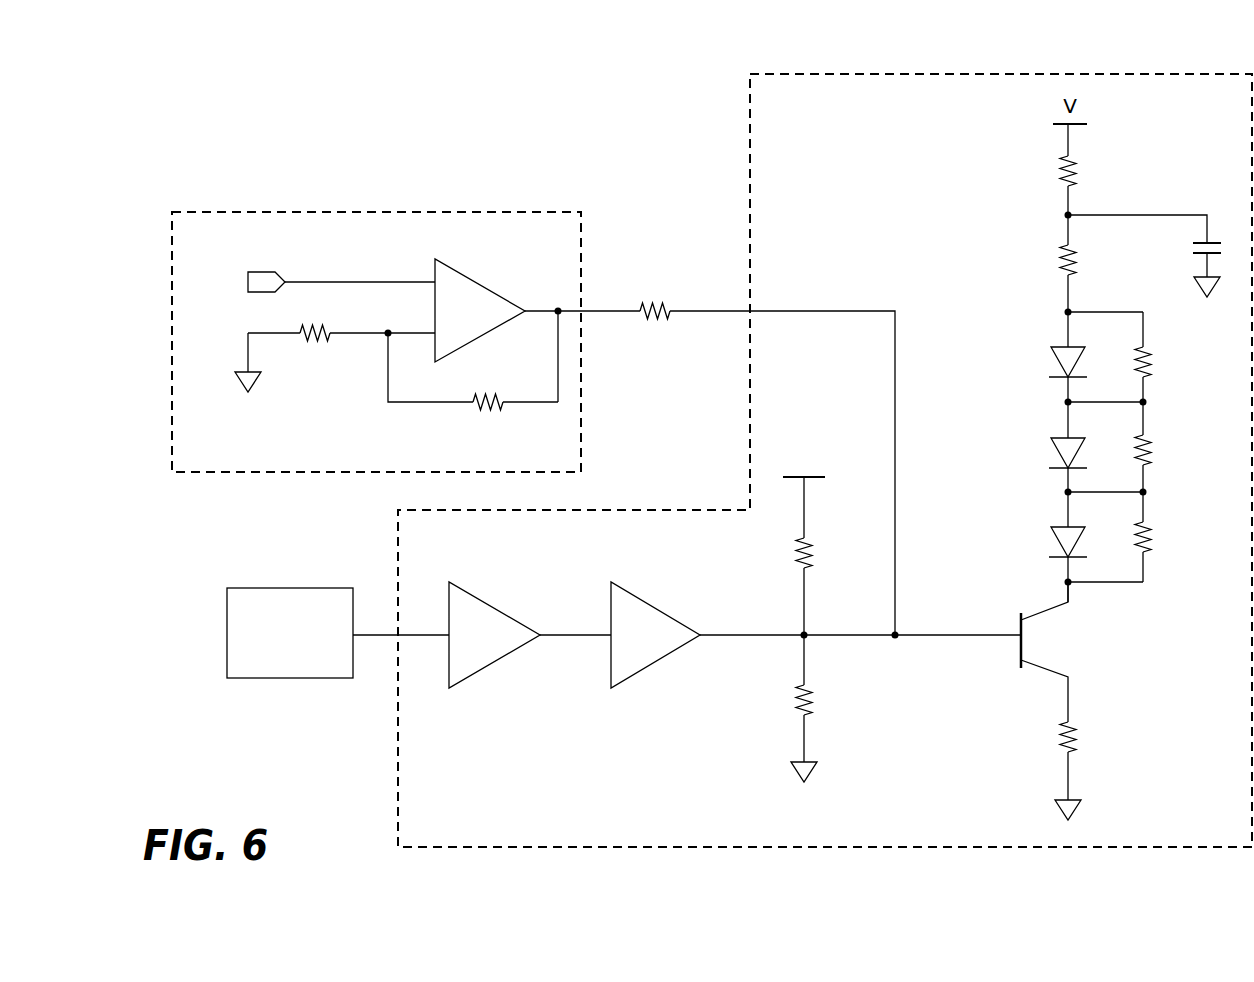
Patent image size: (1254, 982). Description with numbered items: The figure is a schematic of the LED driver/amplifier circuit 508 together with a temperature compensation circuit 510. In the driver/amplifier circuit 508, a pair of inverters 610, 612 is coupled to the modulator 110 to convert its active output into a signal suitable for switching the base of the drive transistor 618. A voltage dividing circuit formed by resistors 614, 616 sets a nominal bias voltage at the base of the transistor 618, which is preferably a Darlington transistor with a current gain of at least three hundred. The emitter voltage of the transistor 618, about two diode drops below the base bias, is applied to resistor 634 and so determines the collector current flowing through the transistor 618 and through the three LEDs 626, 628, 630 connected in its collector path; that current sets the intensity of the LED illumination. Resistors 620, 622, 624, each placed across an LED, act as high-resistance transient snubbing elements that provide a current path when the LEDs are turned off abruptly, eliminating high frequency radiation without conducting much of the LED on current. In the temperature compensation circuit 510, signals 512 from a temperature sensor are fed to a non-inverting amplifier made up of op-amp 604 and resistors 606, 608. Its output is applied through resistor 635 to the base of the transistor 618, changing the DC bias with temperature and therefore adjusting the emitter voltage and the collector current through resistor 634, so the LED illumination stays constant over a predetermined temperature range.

The modulator 110 is at (266, 664).
The driver/amplifier circuit 508 is at (750, 103).
The temperature compensation circuit 510 is at (462, 212).
The signals from a temperature sensor 512 is at (258, 292).
The op-amp 604 is at (472, 288).
The resistor 606 is at (312, 342).
The resistor 608 is at (490, 410).
The inverter 610 is at (470, 675).
The inverter 612 is at (640, 668).
The resistor 614 is at (817, 560).
The resistor 616 is at (817, 702).
The drive transistor 618 is at (1055, 641).
The resistor 620 is at (1157, 365).
The resistor 622 is at (1157, 455).
The resistor 624 is at (1157, 545).
The LED 626 is at (1058, 365).
The LED 628 is at (1055, 452).
The LED 630 is at (1055, 542).
The resistor 634 is at (1080, 742).
The resistor 635 is at (650, 298).